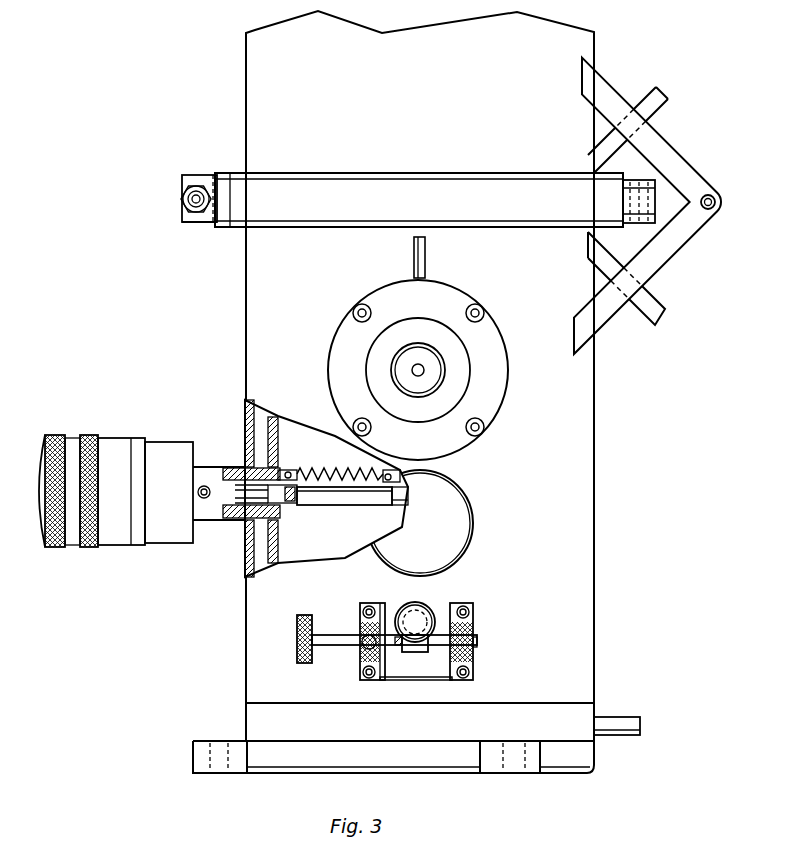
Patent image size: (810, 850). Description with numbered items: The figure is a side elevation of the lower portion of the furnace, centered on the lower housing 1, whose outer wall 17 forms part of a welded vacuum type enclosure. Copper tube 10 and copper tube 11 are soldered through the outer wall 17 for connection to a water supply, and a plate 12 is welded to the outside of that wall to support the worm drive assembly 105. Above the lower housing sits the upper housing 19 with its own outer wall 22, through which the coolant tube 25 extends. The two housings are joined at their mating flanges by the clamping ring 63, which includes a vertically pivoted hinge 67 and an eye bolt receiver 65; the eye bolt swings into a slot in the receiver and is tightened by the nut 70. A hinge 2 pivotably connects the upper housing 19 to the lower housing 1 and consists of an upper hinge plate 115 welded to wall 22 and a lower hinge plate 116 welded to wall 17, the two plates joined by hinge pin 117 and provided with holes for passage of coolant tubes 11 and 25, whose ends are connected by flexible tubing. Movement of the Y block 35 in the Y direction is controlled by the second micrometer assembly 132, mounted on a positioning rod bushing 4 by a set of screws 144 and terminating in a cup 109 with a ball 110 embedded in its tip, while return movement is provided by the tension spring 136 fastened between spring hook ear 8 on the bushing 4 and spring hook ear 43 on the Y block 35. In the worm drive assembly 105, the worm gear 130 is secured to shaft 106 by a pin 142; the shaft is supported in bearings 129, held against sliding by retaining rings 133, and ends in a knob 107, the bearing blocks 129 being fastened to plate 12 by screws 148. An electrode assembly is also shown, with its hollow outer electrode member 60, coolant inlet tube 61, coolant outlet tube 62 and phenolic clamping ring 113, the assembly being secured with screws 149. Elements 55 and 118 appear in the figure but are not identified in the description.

The lower housing 1 is at (544, 562).
The hinge 2 is at (650, 206).
The positioning rod bushings 4 is at (233, 520).
The spring hook ear 8 is at (288, 472).
The copper tube 10 is at (615, 722).
The copper tube 11 is at (640, 312).
The plate 12 is at (438, 675).
The outer wall 17 is at (246, 608).
The upper housing 19 is at (323, 82).
The outer wall 22 is at (246, 113).
The coolant tube 25 is at (650, 100).
The "Y" block 35 is at (367, 500).
The spring hook ear 43 is at (385, 475).
The base 55 is at (205, 741).
The hollow outer electrode member 60 is at (392, 377).
The coolant inlet tube 61 is at (418, 370).
The coolant outlet tube 62 is at (414, 250).
The clamping ring 63 is at (200, 222).
The eye bolt receiver 65 is at (212, 178).
The vertically pivoted hinge 67 is at (657, 207).
The nut 70 is at (181, 199).
The worm drive assembly 105 is at (372, 631).
The shaft 106 is at (330, 633).
The knob 107 is at (296, 617).
The cup 109 is at (285, 503).
The ball 110 is at (307, 490).
The clamping ring 113 is at (455, 283).
The upper hinge plate 115 is at (662, 143).
The lower hinge plate 116 is at (677, 243).
The hinge pin 117 is at (708, 193).
The bearing 118 is at (360, 660).
The bearings 129 is at (362, 620).
The worm gear 130 is at (412, 653).
The second micrometer assembly 132 is at (121, 440).
The retaining rings 133 is at (477, 642).
The tension spring 136 is at (323, 468).
The pin 142 is at (398, 652).
The screws 144 is at (207, 486).
The screws 148 is at (473, 673).
The screws 149 is at (484, 313).